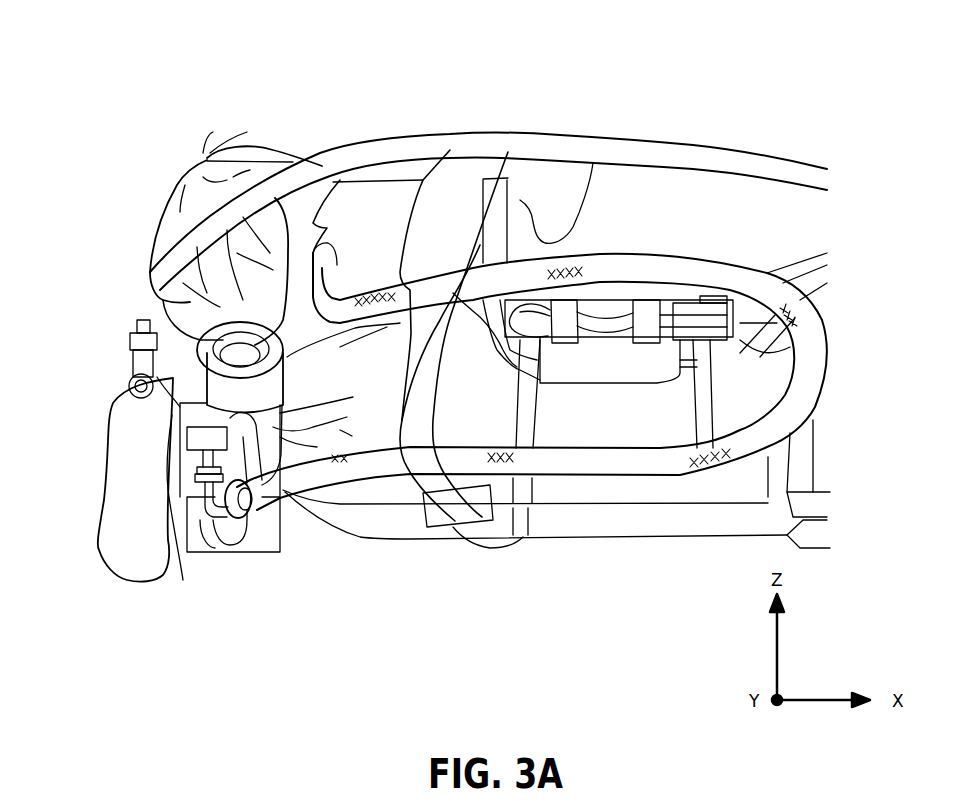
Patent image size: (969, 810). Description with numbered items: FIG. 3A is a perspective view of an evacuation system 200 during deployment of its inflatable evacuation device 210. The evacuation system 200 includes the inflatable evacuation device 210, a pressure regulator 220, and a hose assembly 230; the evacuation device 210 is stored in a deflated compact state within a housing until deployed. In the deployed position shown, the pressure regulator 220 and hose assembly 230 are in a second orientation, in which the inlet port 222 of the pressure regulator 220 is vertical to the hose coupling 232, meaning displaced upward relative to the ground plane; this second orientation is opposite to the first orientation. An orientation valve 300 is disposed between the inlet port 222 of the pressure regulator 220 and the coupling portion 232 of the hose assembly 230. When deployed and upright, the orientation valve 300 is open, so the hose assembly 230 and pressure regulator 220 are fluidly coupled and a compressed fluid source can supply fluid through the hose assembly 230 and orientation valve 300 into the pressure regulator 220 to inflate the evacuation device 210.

The evacuation system 200 is at (118, 102).
The inflatable evacuation device 210 is at (355, 216).
The pressure regulator 220 is at (203, 418).
The inlet port 222 is at (190, 477).
The hose assembly 230 is at (567, 463).
The hose coupling 232 is at (279, 498).
The orientation valve 300 is at (257, 809).